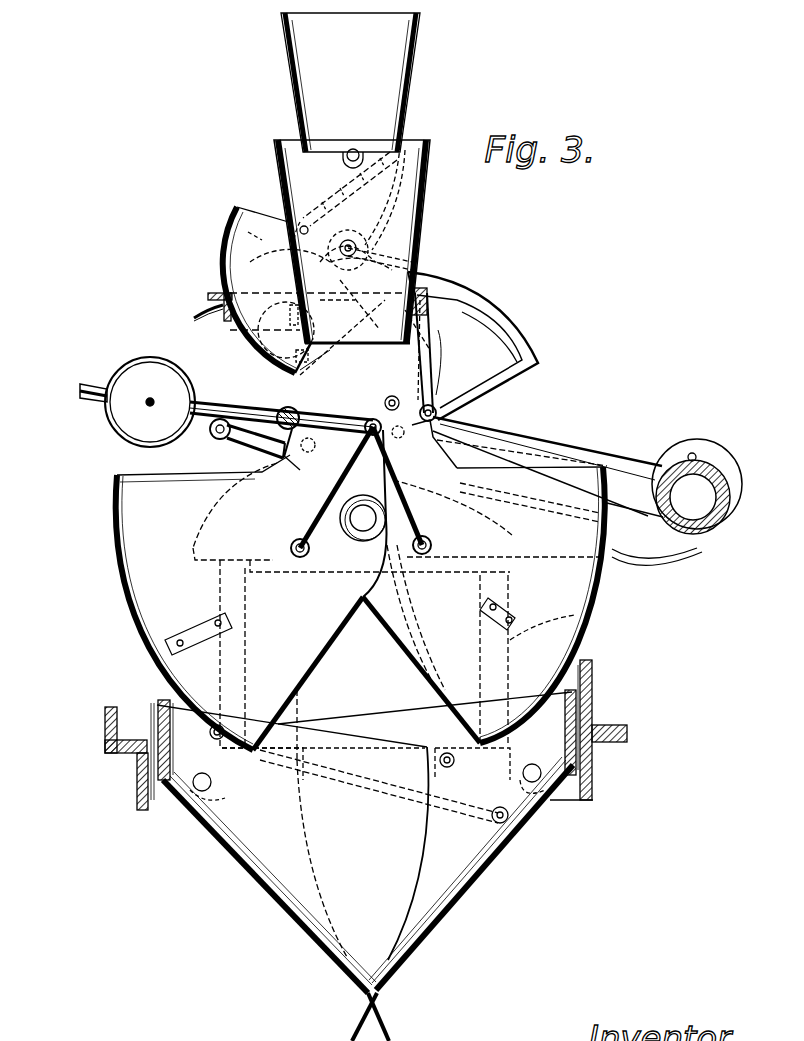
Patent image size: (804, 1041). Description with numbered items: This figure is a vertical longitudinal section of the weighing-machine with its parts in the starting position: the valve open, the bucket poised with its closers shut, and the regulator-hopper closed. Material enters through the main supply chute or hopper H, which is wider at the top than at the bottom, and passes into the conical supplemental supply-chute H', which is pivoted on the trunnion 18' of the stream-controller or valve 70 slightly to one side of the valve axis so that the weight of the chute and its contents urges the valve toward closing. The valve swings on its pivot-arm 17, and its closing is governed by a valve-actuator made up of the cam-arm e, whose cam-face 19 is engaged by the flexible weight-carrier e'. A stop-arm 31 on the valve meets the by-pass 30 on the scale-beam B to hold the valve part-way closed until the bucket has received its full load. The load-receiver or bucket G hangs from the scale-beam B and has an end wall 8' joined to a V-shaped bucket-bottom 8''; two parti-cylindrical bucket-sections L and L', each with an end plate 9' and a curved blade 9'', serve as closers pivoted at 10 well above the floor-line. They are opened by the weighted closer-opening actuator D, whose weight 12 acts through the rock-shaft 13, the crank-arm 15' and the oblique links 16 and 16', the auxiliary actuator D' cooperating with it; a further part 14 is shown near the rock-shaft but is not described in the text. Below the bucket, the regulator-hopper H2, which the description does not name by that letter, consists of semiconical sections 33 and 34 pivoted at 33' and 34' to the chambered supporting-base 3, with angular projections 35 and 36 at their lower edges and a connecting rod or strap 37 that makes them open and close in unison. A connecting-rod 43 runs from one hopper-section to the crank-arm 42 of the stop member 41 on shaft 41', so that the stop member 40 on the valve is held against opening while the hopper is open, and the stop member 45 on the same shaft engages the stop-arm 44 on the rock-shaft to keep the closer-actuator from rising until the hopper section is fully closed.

The main supply chute or hopper H is at (350, 90).
The supplemental supply-chute H' is at (371, 256).
The valve-actuator member (cam-arm) e is at (385, 197).
The valve-actuator member (flexible weight-carrier) e' is at (350, 189).
The cam-face 19 is at (303, 226).
The trunnion 18' is at (364, 240).
The pivot-arm 17 is at (365, 255).
The stop-arm 44 is at (316, 312).
The stream-controller or valve 70 is at (230, 251).
The stop-arm 31 is at (200, 307).
The weight 12 is at (142, 375).
The closer-opening actuator D is at (93, 406).
The crank-arm 15' is at (285, 410).
The by-pass 30 is at (282, 410).
The rock-shaft 13 is at (256, 449).
The link 14 is at (318, 464).
The link 16 is at (327, 492).
The link 16' is at (415, 490).
The pivotal support of closers 10 is at (353, 530).
The rocker or stop member 40 is at (437, 286).
The stop member 41 is at (484, 346).
The stop member 45 is at (428, 351).
The end wall 8' is at (438, 350).
The shaft 41' is at (458, 412).
The crank-arm 42 is at (432, 438).
The scale-beam B is at (607, 462).
The auxiliary actuator D' is at (470, 485).
The end plate 9' is at (360, 455).
The load-receiver or bucket G is at (167, 612).
The curved blade 9'' is at (352, 605).
The bucket-section (closer) L is at (331, 605).
The bucket-section (closer) L' is at (500, 592).
The chambered supporting-base 3 is at (219, 668).
The V-shaped partition (bucket-bottom) 8'' is at (366, 590).
The connecting-rod or stop-member-actuating rod 43 is at (437, 662).
The lower hopper H2 is at (366, 784).
The regulator-hopper section 33 is at (269, 882).
The regulator-hopper section 34 is at (471, 873).
The angularly-disposed projection 35 is at (360, 1018).
The angularly-disposed projection 36 is at (382, 1018).
The pivot of hopper-section 33 33' is at (225, 786).
The pivot of hopper-section 34 34' is at (506, 778).
The connecting rod or strap 37 is at (343, 775).